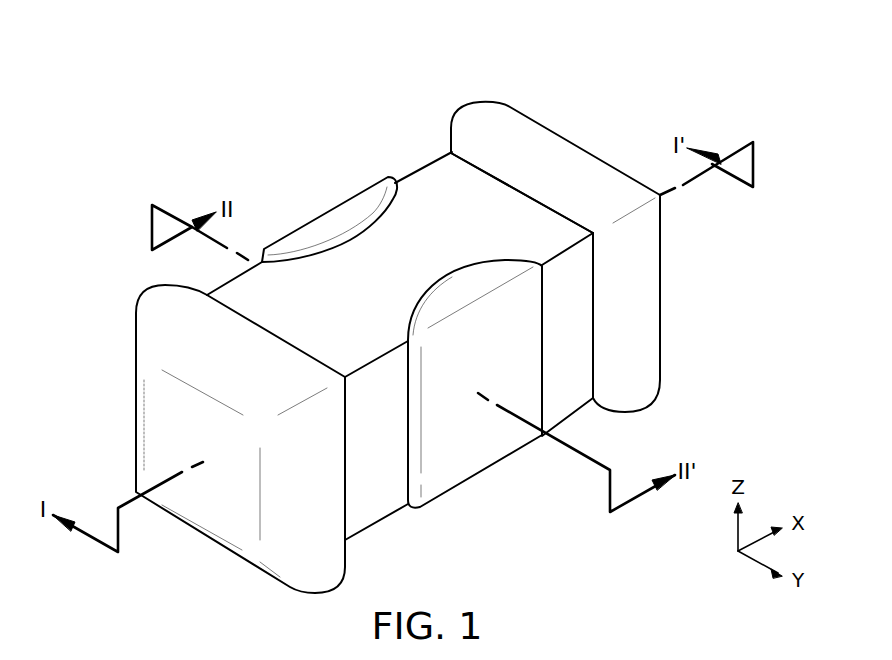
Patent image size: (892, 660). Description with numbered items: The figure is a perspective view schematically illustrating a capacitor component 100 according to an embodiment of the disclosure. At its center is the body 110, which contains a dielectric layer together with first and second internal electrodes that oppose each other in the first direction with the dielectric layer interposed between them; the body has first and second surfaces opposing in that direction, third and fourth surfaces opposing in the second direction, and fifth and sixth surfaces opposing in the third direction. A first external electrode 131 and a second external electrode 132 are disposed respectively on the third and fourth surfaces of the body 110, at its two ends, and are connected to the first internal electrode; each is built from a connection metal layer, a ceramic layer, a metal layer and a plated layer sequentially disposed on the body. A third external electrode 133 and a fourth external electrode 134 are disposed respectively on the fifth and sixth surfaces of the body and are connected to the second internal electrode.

The capacitor component 100 is at (136, 48).
The body 110 is at (412, 205).
The first external electrode 131 is at (160, 303).
The second external electrode 132 is at (473, 122).
The third external electrode 133 is at (472, 440).
The fourth external electrode 134 is at (323, 225).